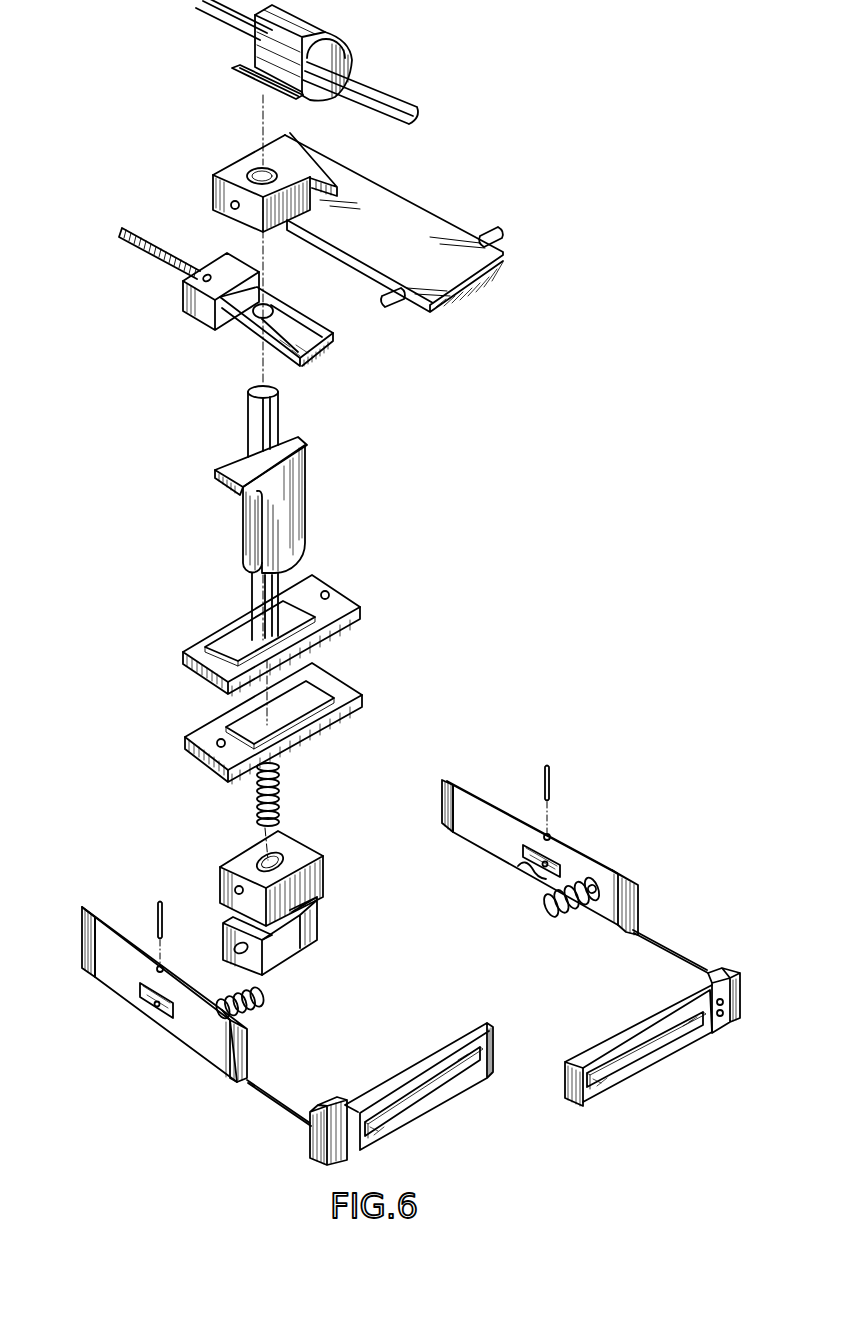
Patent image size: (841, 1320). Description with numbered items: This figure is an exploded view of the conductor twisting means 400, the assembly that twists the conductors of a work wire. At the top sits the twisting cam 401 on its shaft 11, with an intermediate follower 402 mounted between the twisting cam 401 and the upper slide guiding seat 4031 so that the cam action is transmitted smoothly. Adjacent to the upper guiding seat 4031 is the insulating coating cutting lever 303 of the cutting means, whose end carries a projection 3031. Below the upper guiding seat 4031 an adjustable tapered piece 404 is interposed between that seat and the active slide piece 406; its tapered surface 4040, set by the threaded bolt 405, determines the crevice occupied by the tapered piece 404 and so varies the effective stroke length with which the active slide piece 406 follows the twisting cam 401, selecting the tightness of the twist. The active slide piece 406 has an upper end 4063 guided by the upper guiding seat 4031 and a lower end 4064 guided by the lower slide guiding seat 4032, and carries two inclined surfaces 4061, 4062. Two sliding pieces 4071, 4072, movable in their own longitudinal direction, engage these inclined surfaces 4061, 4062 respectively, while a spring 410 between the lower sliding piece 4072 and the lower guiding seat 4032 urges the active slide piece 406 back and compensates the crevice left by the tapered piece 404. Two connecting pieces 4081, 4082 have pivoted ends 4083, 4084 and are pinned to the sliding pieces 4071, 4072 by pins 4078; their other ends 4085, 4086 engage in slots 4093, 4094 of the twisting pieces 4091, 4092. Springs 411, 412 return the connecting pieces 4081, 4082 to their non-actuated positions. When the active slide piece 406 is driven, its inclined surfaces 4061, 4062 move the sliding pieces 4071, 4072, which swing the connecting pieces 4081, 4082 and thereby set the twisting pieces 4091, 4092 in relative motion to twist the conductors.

The rod 11 is at (372, 84).
The twisting cam 401 is at (322, 33).
The intermediate follower 402 is at (240, 80).
The upper slide guiding seat 4031 is at (238, 170).
The projection 3031 is at (316, 157).
The insulating coating cutting lever 303 is at (417, 258).
The threaded bolt 405 is at (175, 248).
The adjustable tapered piece 404 is at (187, 298).
The tapered surface 4040 is at (248, 316).
The end of active slide piece 4063 is at (250, 413).
The active slide piece 406 is at (290, 508).
The inclined surface 4061 is at (260, 490).
The inclined surface 4062 is at (297, 556).
The end of active slide piece 4064 is at (257, 592).
The sliding piece 4071 is at (337, 598).
The conductor twisting means 400 is at (387, 632).
The sliding piece 4072 is at (334, 683).
The spring 410 is at (280, 784).
The lower slide guiding seat 4032 is at (327, 873).
The connecting piece 4082 is at (115, 980).
The end of connecting piece 4084 is at (80, 930).
The pin 4078 is at (156, 905).
The spring 412 is at (258, 1001).
The end of connecting piece 4086 is at (272, 1092).
The slot 4094 is at (327, 1108).
The twisting piece 4092 is at (423, 1107).
The connecting piece 4081 is at (483, 837).
The end of connecting piece 4083 is at (441, 787).
The spring 411 is at (540, 903).
The end of connecting piece 4085 is at (657, 932).
The slot 4093 is at (713, 965).
The twisting piece 4091 is at (647, 1053).